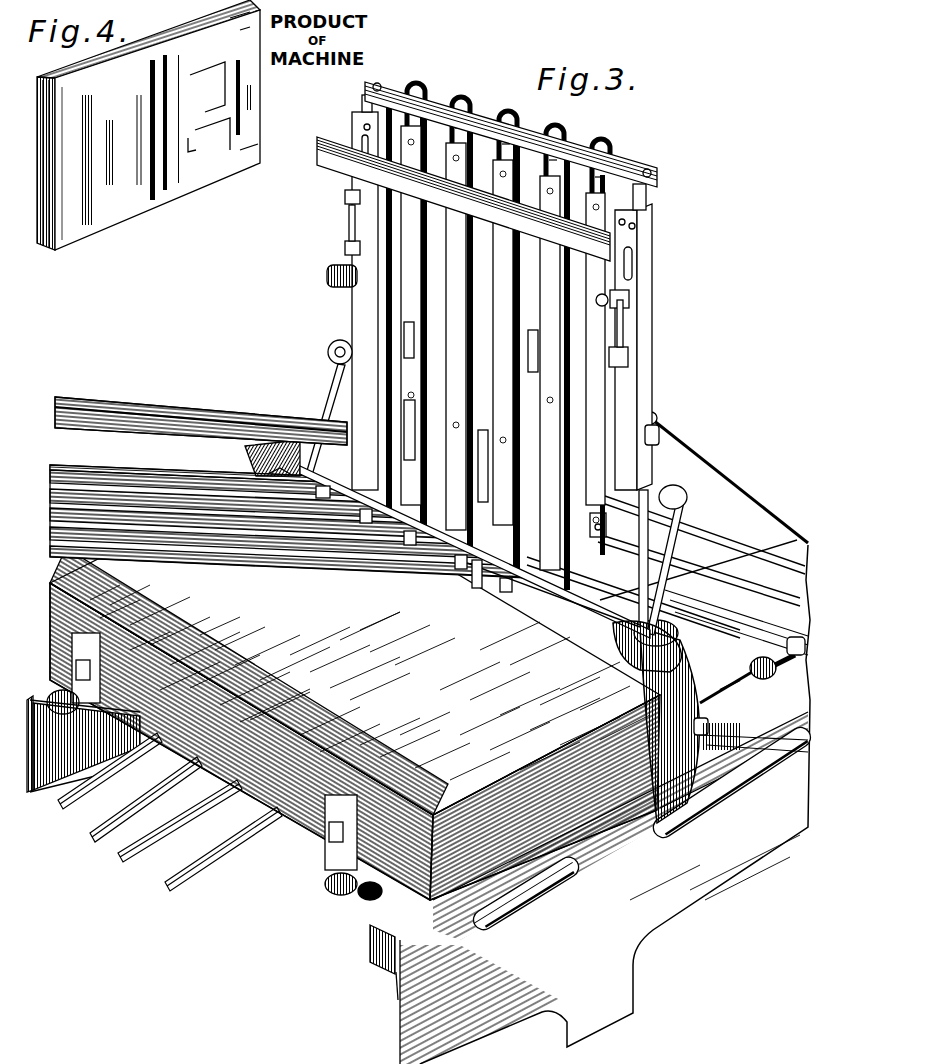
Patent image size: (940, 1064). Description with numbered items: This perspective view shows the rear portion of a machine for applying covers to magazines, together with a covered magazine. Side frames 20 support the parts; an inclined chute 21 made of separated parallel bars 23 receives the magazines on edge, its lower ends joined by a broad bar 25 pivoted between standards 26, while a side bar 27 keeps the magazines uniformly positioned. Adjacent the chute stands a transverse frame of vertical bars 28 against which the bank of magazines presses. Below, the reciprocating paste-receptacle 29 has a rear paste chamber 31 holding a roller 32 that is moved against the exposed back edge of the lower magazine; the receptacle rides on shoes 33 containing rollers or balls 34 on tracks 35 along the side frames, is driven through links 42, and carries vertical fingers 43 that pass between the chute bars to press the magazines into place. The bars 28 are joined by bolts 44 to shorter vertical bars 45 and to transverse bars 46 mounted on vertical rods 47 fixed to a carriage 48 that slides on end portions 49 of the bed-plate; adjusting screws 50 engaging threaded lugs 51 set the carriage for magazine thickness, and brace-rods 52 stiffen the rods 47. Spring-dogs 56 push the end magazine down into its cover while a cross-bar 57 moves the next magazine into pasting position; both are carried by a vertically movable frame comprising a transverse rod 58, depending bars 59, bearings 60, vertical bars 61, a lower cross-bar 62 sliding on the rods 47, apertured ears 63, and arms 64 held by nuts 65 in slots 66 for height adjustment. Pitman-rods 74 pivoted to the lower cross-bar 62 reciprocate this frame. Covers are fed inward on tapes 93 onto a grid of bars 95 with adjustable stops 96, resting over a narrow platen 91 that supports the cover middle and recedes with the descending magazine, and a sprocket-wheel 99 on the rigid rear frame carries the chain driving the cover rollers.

The side frames 20 is at (605, 804).
The inclined chute 21 is at (289, 509).
The parallel separated bars 23 is at (52, 546).
The broad bar 25 is at (560, 598).
The standards 26 is at (700, 800).
The bar 27 is at (201, 412).
The vertical bars 28 is at (386, 290).
The paste-receptacle 29 is at (355, 684).
The paste chamber 31 is at (495, 598).
The roller 32 is at (520, 608).
The shoes 33 is at (628, 835).
The rollers or balls 34 is at (570, 868).
The tracks 35 is at (58, 690).
The links 42 is at (72, 643).
The vertical fingers 43 is at (330, 488).
The bolts 44 is at (412, 95).
The vertical bars 45 is at (458, 112).
The transverse upper and lower bars 46 is at (656, 178).
The vertical rods 47 is at (362, 99).
The carriage 48 is at (736, 671).
The end portions of bed-plate 49 is at (740, 689).
The adjusting screws 50 is at (758, 665).
The internally threaded lugs 51 is at (792, 666).
The brace-rods 52 is at (760, 495).
The spring-dogs 56 is at (400, 331).
The cross-bar 57 is at (463, 199).
The transverse rod 58 is at (415, 303).
The depending bars 59 is at (400, 423).
The bearings 60 is at (345, 245).
The vertical bars 61 is at (349, 220).
The lower cross-bar 62 is at (328, 358).
The apertured ears 63 is at (352, 116).
The arms 64 is at (352, 170).
The nuts 65 is at (345, 195).
The slots 66 is at (327, 241).
The pitman-rods 74 is at (328, 398).
The platen 91 is at (687, 685).
The tapes or belts 93 is at (154, 793).
The grid of bars 95 is at (770, 555).
The adjustable stops 96 is at (600, 538).
The sprocket-wheel 99 is at (733, 692).